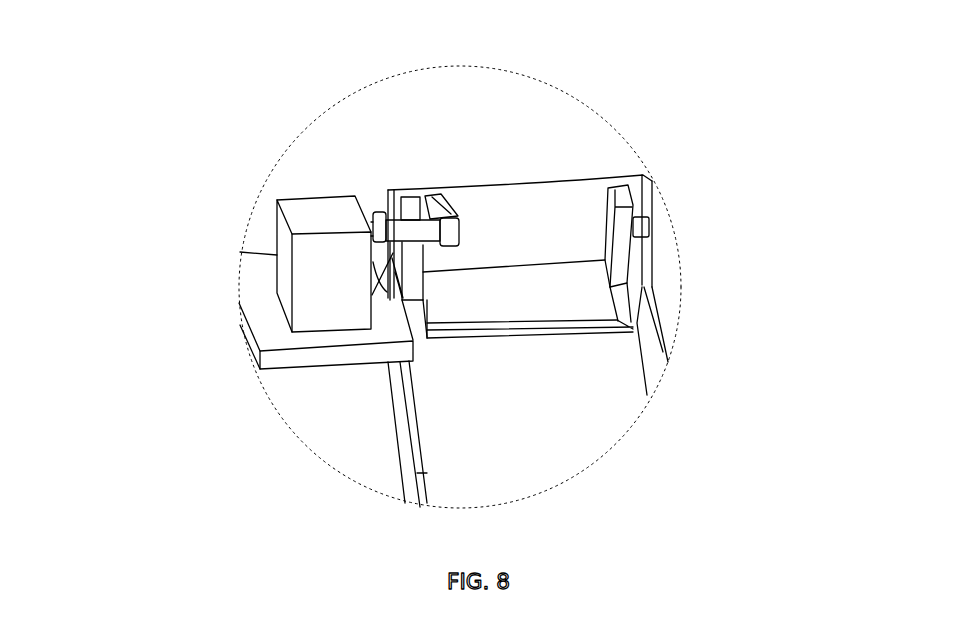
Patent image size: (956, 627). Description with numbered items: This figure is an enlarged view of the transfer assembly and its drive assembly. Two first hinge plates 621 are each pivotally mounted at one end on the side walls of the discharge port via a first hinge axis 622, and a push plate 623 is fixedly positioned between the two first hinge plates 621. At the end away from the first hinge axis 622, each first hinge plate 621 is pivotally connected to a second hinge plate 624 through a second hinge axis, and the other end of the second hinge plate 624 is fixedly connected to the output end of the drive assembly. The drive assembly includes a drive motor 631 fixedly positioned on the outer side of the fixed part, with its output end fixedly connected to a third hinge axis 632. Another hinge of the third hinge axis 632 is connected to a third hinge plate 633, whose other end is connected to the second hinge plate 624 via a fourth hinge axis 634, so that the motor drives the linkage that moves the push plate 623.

The first hinge plate 621 is at (405, 203).
The first hinge axis 622 is at (650, 233).
The push plate 623 is at (548, 297).
The second hinge plate 624 is at (441, 217).
The drive motor 631 is at (310, 284).
The third hinge axis 632 is at (375, 230).
The third hinge plate 633 is at (371, 238).
The fourth hinge axis 634 is at (405, 236).